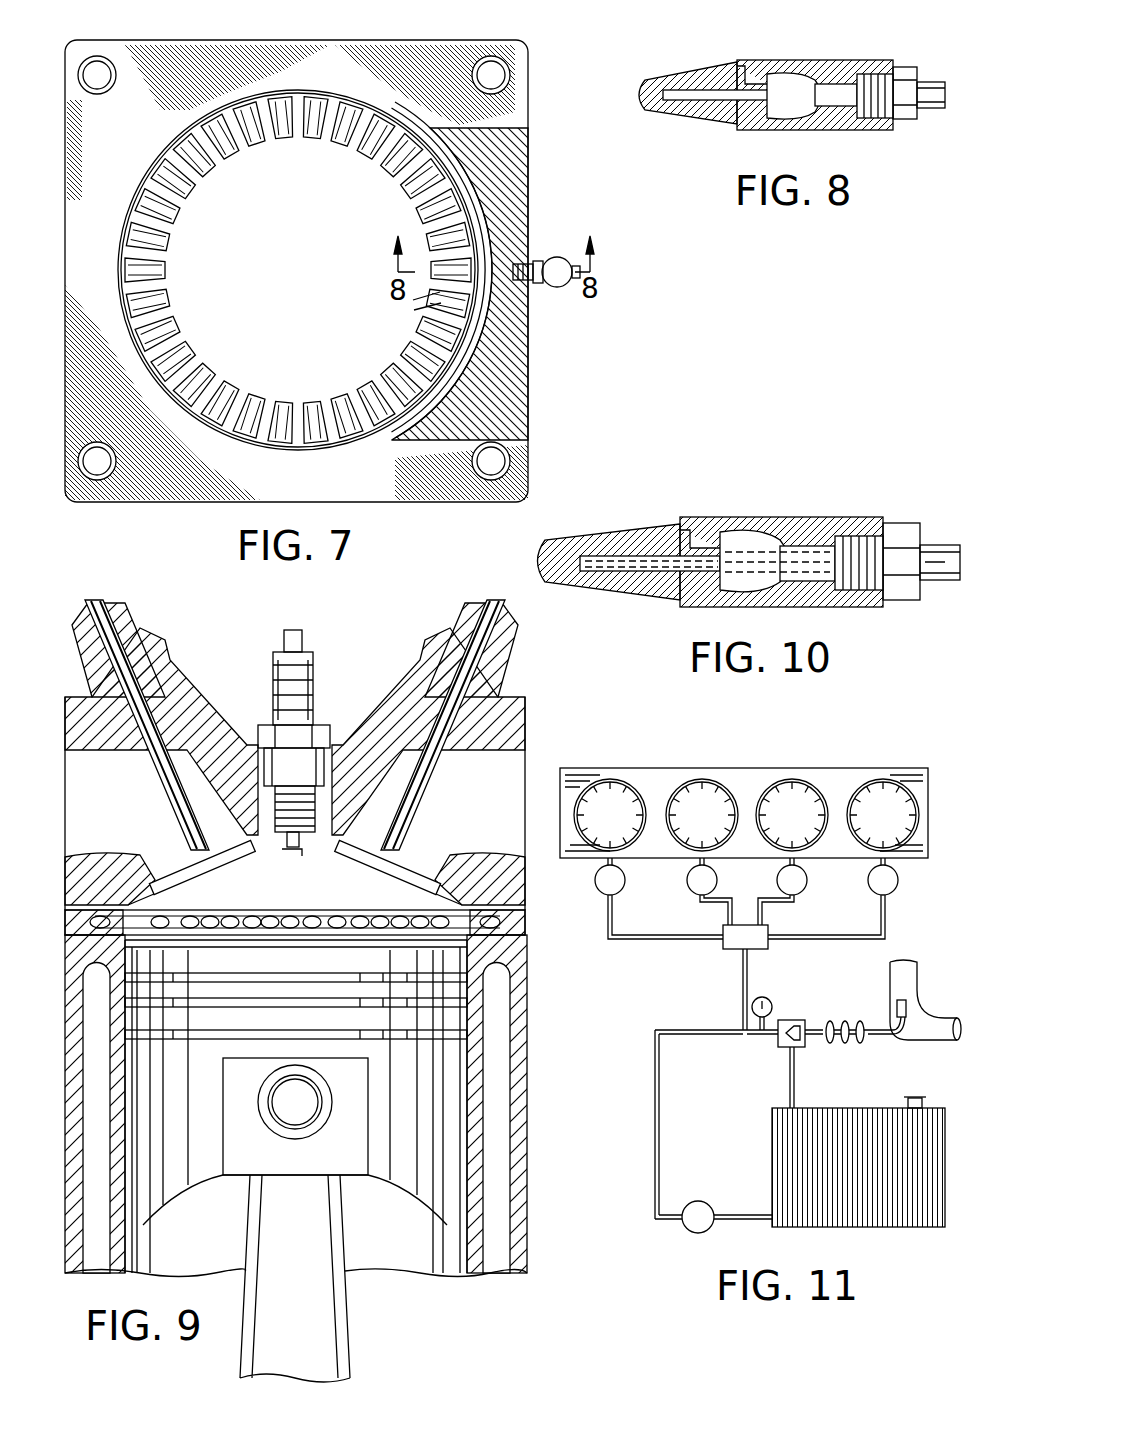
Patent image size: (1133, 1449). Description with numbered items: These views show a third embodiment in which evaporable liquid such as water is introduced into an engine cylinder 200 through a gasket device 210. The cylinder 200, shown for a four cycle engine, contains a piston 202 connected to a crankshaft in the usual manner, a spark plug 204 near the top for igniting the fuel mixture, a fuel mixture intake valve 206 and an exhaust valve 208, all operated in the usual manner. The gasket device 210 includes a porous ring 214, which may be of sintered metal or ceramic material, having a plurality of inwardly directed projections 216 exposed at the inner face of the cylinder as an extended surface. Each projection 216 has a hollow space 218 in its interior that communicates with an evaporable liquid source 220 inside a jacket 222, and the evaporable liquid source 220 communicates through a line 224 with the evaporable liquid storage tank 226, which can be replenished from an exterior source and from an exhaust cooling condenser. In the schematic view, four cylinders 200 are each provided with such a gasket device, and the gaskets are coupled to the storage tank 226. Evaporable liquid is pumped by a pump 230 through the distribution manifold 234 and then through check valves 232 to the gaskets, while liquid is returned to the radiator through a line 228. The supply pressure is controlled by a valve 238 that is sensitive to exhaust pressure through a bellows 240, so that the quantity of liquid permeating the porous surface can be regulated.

In FIG. 7, the cylinder 200 is at (530, 350).
In FIG. 9, the cylinder 200 is at (518, 1115).
In FIG. 11, the cylinder 200 is at (693, 782).
In FIG. 9, the piston 202 is at (277, 1168).
In FIG. 9, the spark plug 204 is at (312, 690).
In FIG. 9, the fuel mixture intake valve 206 is at (410, 786).
In FIG. 9, the exhaust valve 208 is at (178, 786).
In FIG. 7, the gasket device 210 is at (530, 388).
In FIG. 8, the gasket device 210 is at (760, 58).
In FIG. 10, the gasket device 210 is at (693, 512).
In FIG. 9, the gasket device 210 is at (527, 920).
In FIG. 11, the gasket device 210 is at (744, 738).
In FIG. 8, the porous ring 214 is at (760, 72).
In FIG. 10, the porous ring 214 is at (703, 537).
In FIG. 7, the projection 216 is at (332, 143).
In FIG. 8, the projection 216 is at (650, 112).
In FIG. 10, the projection 216 is at (600, 584).
In FIG. 9, the projection 216 is at (135, 912).
In FIG. 11, the projection 216 is at (746, 815).
In FIG. 7, the hollow space 218 is at (425, 338).
In FIG. 8, the hollow space 218 is at (705, 96).
In FIG. 10, the hollow space 218 is at (655, 568).
In FIG. 7, the evaporable liquid source 220 is at (470, 175).
In FIG. 8, the evaporable liquid source 220 is at (805, 82).
In FIG. 10, the evaporable liquid source 220 is at (770, 543).
In FIG. 8, the jacket 222 is at (843, 130).
In FIG. 10, the jacket 222 is at (850, 607).
In FIG. 7, the line 224 is at (541, 285).
In FIG. 8, the line 224 is at (925, 108).
In FIG. 10, the line 224 is at (925, 545).
In FIG. 11, the evaporable liquid storage tank 226 is at (700, 985).
In FIG. 11, the line 228 is at (789, 1079).
In FIG. 11, the pump 230 is at (700, 1201).
In FIG. 7, the check valve 232 is at (556, 257).
In FIG. 11, the check valve 232 is at (594, 878).
In FIG. 11, the distribution manifold 234 is at (768, 948).
In FIG. 11, the valve 238 is at (792, 1020).
In FIG. 11, the bellows 240 is at (841, 1022).